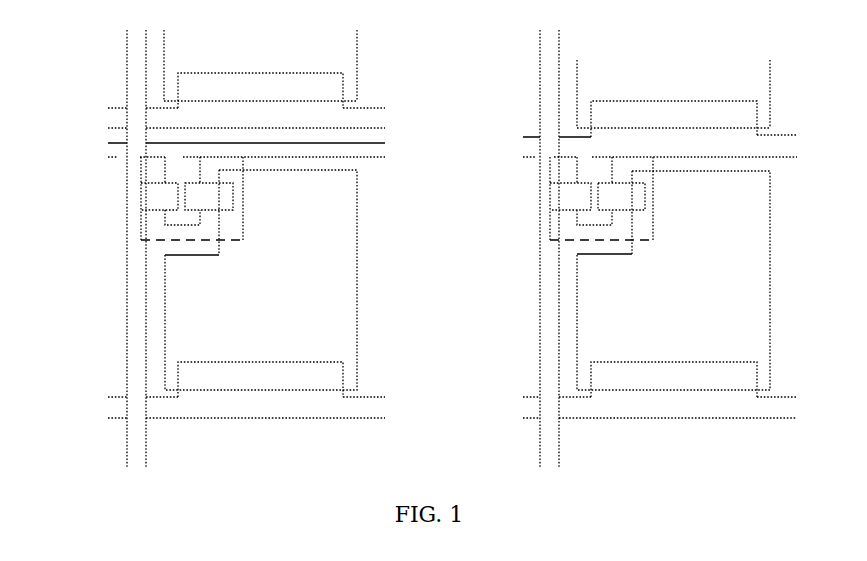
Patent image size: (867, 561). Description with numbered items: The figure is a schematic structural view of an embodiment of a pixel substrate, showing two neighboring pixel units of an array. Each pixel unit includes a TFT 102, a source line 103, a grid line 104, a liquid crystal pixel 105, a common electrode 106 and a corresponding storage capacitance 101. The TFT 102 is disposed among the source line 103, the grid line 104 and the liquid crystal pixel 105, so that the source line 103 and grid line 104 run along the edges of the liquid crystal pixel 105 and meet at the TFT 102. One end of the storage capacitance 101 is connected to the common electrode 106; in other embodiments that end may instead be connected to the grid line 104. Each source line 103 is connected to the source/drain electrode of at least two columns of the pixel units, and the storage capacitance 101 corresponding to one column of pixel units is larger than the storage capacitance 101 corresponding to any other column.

The storage capacitance 101 is at (467, 235).
The TFT 102 is at (142, 200).
The source line 103 is at (137, 277).
The grid line 104 is at (108, 147).
The liquid crystal pixel 105 is at (467, 280).
The common electrode 106 is at (452, 263).